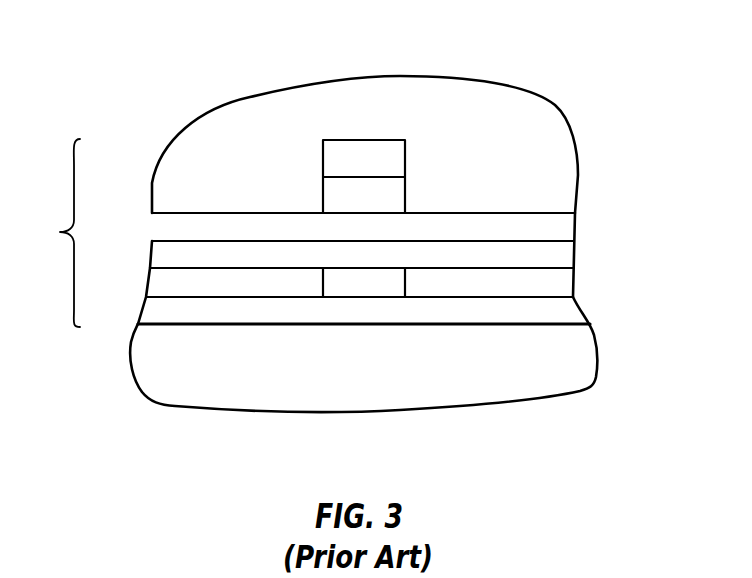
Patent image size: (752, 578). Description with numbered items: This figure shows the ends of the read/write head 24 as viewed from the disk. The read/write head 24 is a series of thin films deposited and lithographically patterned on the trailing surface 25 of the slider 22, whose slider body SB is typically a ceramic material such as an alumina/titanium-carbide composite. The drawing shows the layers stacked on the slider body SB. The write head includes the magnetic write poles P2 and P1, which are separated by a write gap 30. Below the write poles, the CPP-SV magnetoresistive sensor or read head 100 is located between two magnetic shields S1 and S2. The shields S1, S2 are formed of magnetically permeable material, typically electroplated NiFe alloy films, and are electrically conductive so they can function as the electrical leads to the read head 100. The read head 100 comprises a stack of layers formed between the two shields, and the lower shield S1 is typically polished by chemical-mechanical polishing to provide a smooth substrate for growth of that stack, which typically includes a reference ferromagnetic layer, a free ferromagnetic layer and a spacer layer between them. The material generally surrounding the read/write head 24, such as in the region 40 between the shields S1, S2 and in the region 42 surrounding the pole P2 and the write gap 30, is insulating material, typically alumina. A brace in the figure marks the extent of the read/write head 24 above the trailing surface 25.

The region surrounding P2 and write gap 42 is at (557, 135).
The magnetic write pole P2 is at (395, 159).
The write gap 30 is at (395, 197).
The magnetic write pole P1 is at (560, 225).
The magnetic shield S2 is at (560, 255).
The region between shields 40 is at (560, 283).
The read head 100 is at (390, 286).
The read/write head 24 is at (51, 233).
The trailing surface 25 is at (148, 322).
The magnetic shield S1 is at (217, 318).
The slider 22 is at (172, 397).
The slider body SB is at (332, 391).